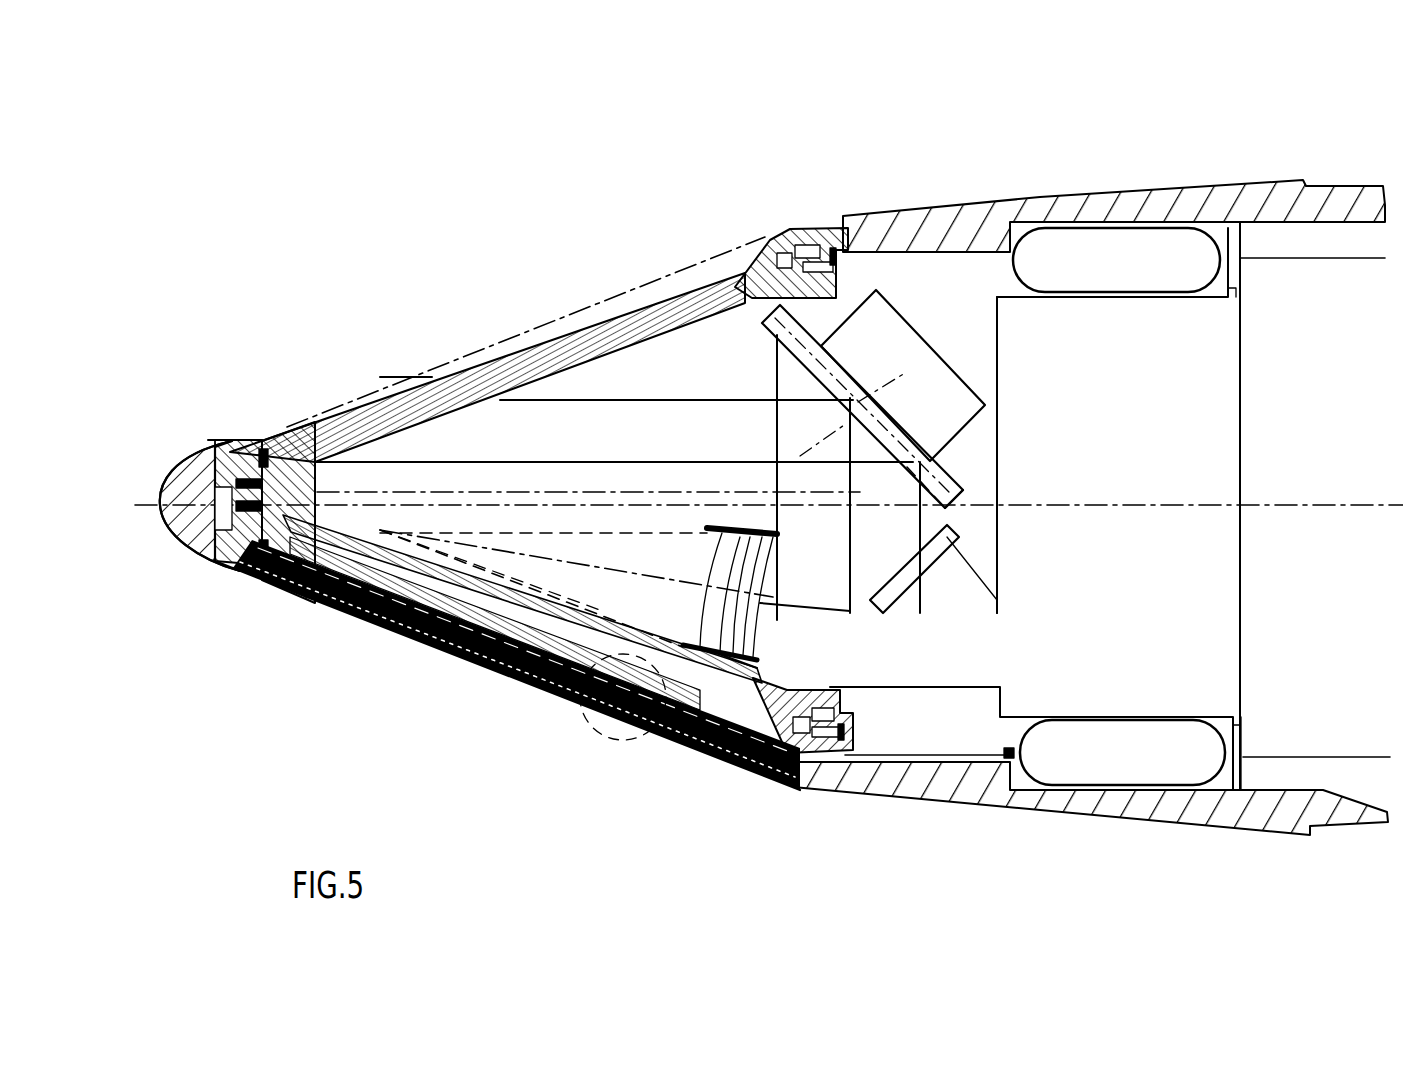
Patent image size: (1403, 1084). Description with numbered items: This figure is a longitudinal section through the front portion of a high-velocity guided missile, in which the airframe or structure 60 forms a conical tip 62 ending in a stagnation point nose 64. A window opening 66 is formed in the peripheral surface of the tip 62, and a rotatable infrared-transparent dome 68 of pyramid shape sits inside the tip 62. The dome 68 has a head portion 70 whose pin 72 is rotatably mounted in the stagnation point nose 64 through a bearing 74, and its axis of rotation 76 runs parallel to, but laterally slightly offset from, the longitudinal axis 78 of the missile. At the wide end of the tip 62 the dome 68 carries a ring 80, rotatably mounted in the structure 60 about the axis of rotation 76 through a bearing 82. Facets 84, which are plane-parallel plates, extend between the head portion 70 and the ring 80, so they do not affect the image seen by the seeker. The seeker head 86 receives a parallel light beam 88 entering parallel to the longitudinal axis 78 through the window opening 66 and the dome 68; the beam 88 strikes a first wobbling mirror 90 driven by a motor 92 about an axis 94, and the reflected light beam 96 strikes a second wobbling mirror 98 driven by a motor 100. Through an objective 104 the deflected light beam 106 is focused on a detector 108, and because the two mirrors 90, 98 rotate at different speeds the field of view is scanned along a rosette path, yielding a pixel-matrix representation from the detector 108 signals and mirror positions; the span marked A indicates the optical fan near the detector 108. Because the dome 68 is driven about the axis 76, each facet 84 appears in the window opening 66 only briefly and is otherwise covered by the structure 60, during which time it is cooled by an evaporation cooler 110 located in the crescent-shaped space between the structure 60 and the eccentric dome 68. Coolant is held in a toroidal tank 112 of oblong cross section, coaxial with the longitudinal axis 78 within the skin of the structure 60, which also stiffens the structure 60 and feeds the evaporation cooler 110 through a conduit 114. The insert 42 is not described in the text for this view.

The insert 42 is at (235, 445).
The structure 60 is at (835, 226).
The conical tip 62 is at (446, 683).
The stagnation point nose 64 is at (178, 527).
The window opening 66 is at (553, 327).
The rotatable infrared-transparent dome 68 is at (323, 423).
The head portion 70 is at (275, 440).
The pin 72 is at (273, 584).
The bearing 74 is at (250, 580).
The axis of rotation 76 is at (555, 490).
The longitudinal axis 78 is at (1093, 497).
The ring 80 is at (746, 762).
The bearing 82 is at (785, 232).
The facets 84 is at (385, 623).
The seeker head 86 is at (968, 462).
The parallel light beam 88 is at (681, 400).
The first wobbling mirror 90 is at (975, 460).
The motor 92 is at (900, 332).
The axis 94 is at (992, 383).
The reflected light beam 96 is at (858, 590).
The second wobbling mirror 98 is at (960, 531).
The motor 100 is at (963, 577).
The objective 104 is at (735, 742).
The deflected light beam 106 is at (850, 578).
The detector 108 is at (378, 530).
The evaporation cooler 110 is at (500, 672).
The tank 112 is at (1095, 262).
The conduit 114 is at (876, 792).
The angle A is at (590, 737).